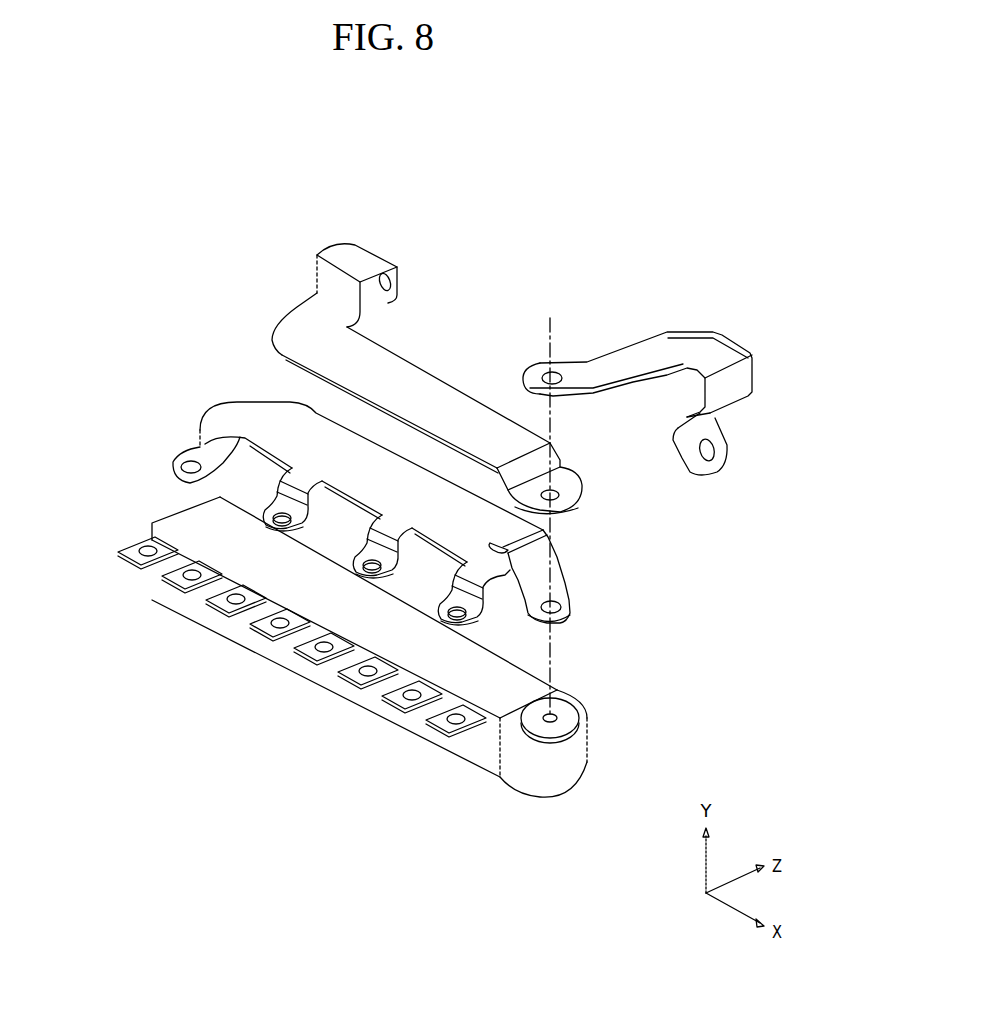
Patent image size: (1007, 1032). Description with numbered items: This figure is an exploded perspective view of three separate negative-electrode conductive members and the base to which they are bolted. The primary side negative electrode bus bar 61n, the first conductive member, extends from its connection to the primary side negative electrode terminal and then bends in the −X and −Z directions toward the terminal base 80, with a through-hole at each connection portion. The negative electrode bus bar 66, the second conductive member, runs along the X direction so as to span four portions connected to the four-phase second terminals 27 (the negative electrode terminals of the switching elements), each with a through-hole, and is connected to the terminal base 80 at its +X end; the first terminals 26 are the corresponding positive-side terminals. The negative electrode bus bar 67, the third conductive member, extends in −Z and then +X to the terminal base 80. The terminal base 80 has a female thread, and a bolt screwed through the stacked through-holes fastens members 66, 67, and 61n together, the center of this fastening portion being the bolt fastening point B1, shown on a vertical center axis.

The first terminal 26 is at (124, 568).
The second terminal 27 is at (182, 585).
The primary side negative electrode bus bar 61n is at (683, 343).
The negative electrode bus bar 66 is at (270, 423).
The negative electrode bus bar 67 is at (425, 392).
The terminal base 80 is at (560, 762).
The bolt fastening point B1 is at (554, 333).